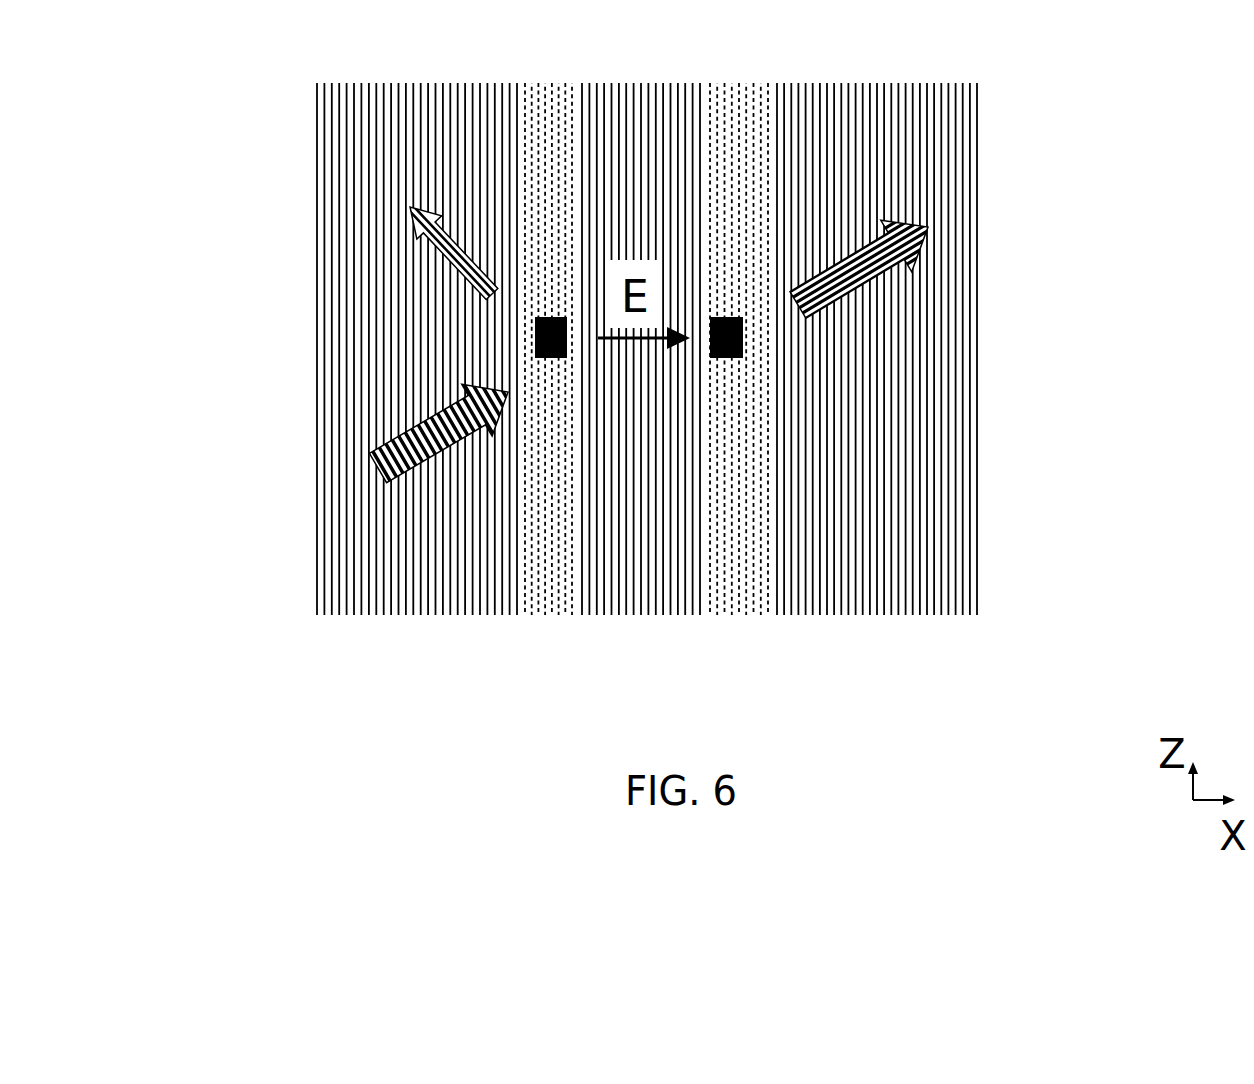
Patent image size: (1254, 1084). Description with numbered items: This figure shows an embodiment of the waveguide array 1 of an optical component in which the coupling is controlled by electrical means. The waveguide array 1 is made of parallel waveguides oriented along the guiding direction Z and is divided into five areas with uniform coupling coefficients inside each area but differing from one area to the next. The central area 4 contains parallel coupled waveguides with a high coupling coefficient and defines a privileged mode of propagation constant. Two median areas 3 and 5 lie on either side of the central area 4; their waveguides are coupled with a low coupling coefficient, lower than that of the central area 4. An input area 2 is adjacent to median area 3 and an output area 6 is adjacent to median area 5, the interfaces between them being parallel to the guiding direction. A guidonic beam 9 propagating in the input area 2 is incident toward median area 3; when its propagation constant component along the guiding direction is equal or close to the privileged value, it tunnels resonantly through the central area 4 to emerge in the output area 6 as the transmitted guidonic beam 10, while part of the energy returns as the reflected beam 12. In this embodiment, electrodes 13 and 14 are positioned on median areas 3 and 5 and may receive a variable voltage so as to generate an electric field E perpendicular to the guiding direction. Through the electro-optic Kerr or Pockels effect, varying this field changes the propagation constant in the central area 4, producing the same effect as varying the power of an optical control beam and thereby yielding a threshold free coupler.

The waveguide array 1 is at (605, 361).
The input area 2 is at (342, 130).
The median area 3 is at (535, 90).
The central area 4 is at (608, 98).
The median area 5 is at (753, 598).
The output area 6 is at (918, 603).
The guidonic beam 9 is at (400, 433).
The transmitted guidonic beam 10 is at (860, 290).
The reflected beam 12 is at (440, 253).
The electrode 13 is at (556, 358).
The electrode 14 is at (728, 358).